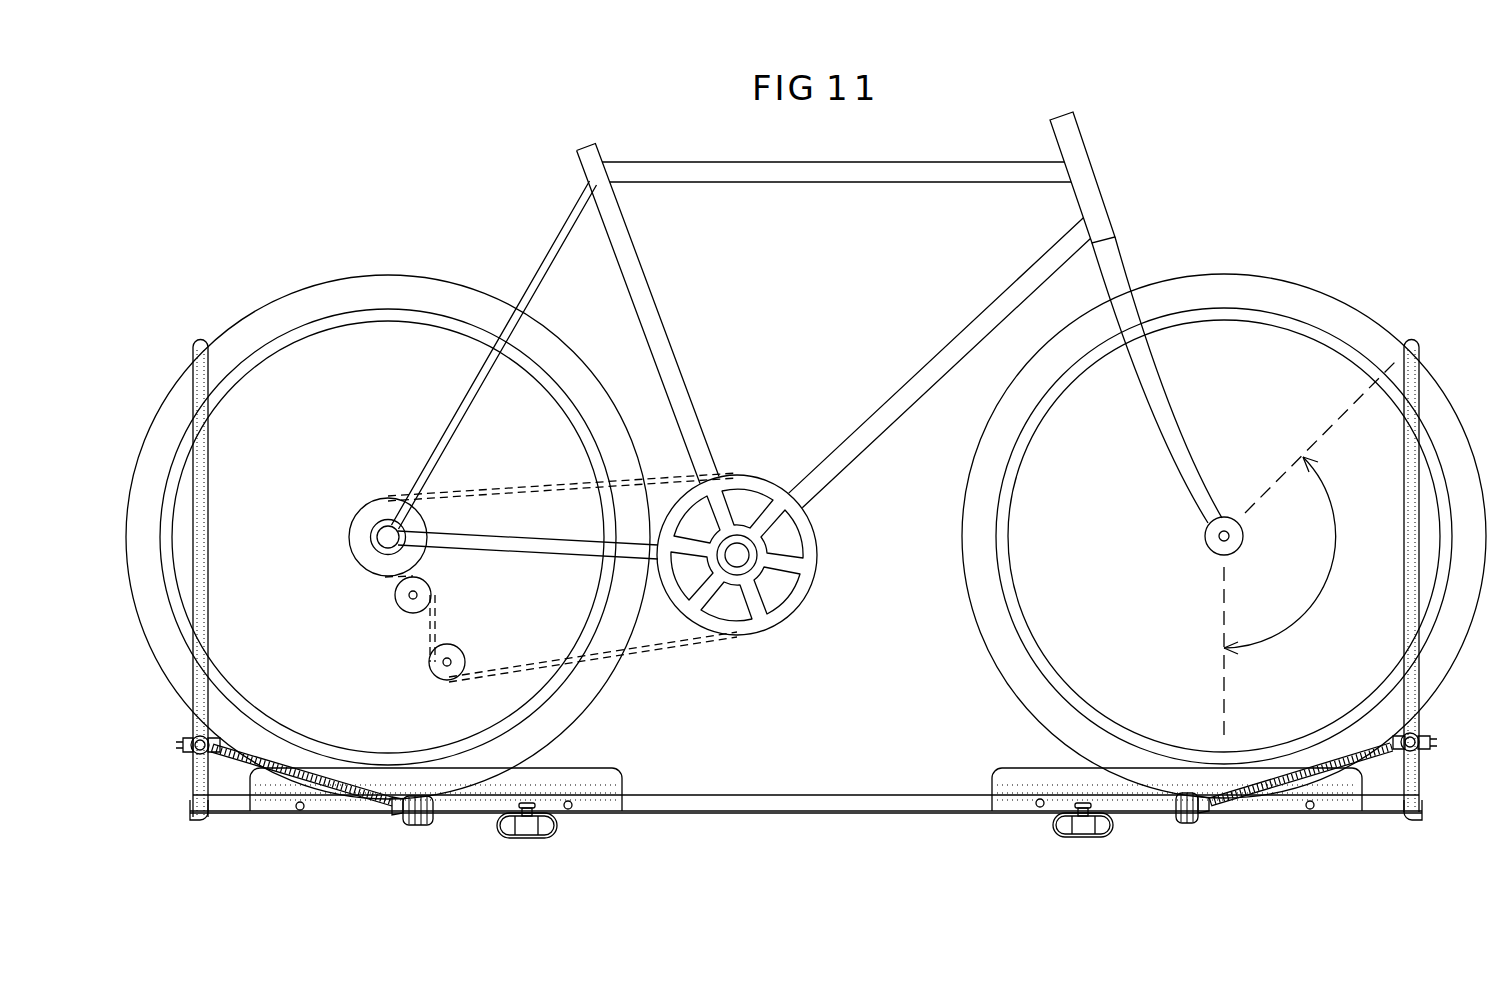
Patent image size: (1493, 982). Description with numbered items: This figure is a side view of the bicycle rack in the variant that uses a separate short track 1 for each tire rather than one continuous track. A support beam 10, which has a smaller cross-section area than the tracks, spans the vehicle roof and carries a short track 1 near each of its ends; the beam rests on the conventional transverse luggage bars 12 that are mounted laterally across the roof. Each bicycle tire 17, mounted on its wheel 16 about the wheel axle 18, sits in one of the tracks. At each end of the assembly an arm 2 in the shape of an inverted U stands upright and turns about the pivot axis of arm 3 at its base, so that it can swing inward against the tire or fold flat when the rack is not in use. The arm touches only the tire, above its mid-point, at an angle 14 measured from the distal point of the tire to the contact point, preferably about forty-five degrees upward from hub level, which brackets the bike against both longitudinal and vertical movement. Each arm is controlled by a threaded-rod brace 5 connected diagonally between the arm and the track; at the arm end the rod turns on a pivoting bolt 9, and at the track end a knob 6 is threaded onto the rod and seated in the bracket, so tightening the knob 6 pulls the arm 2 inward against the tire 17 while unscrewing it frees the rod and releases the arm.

The track 1 is at (598, 768).
The arm 2 is at (212, 490).
The pivot axis of arm 3 is at (1412, 812).
The threaded-rod brace for pivoting arm 5 is at (1357, 757).
The knob 6 is at (1187, 823).
The pivoting bolt 9 is at (1417, 748).
The support beam 10 is at (790, 793).
The transverse bar 12 is at (1068, 838).
The angle from distal point of tire to contact point of arm on tire 14 is at (1337, 503).
The wheel 16 is at (1023, 627).
The tire 17 is at (377, 288).
The wheel axle 18 is at (1217, 535).